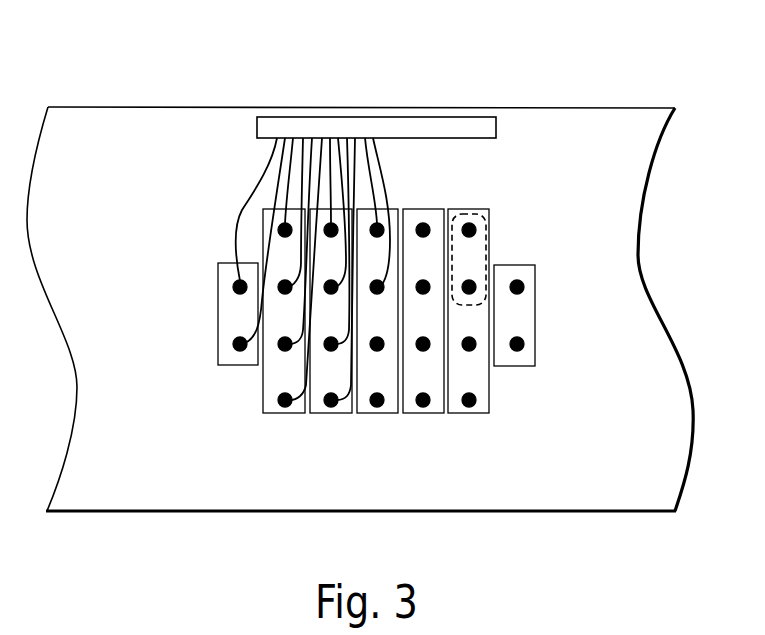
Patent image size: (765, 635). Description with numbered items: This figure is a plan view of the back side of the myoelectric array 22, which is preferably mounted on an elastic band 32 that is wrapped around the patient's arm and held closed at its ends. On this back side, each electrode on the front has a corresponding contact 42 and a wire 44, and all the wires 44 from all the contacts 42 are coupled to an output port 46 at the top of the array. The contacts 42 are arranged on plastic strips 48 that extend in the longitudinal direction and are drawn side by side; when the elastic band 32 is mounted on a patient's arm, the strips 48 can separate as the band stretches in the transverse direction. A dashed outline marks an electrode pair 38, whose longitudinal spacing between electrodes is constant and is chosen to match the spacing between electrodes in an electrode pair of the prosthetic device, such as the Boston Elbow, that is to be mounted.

The array 22 is at (424, 84).
The elastic band 32 is at (110, 194).
The electrode pair 38 is at (487, 240).
The contact 42 is at (232, 289).
The wire 44 is at (280, 180).
The output port 46 is at (343, 117).
The plastic strips 48 is at (241, 365).